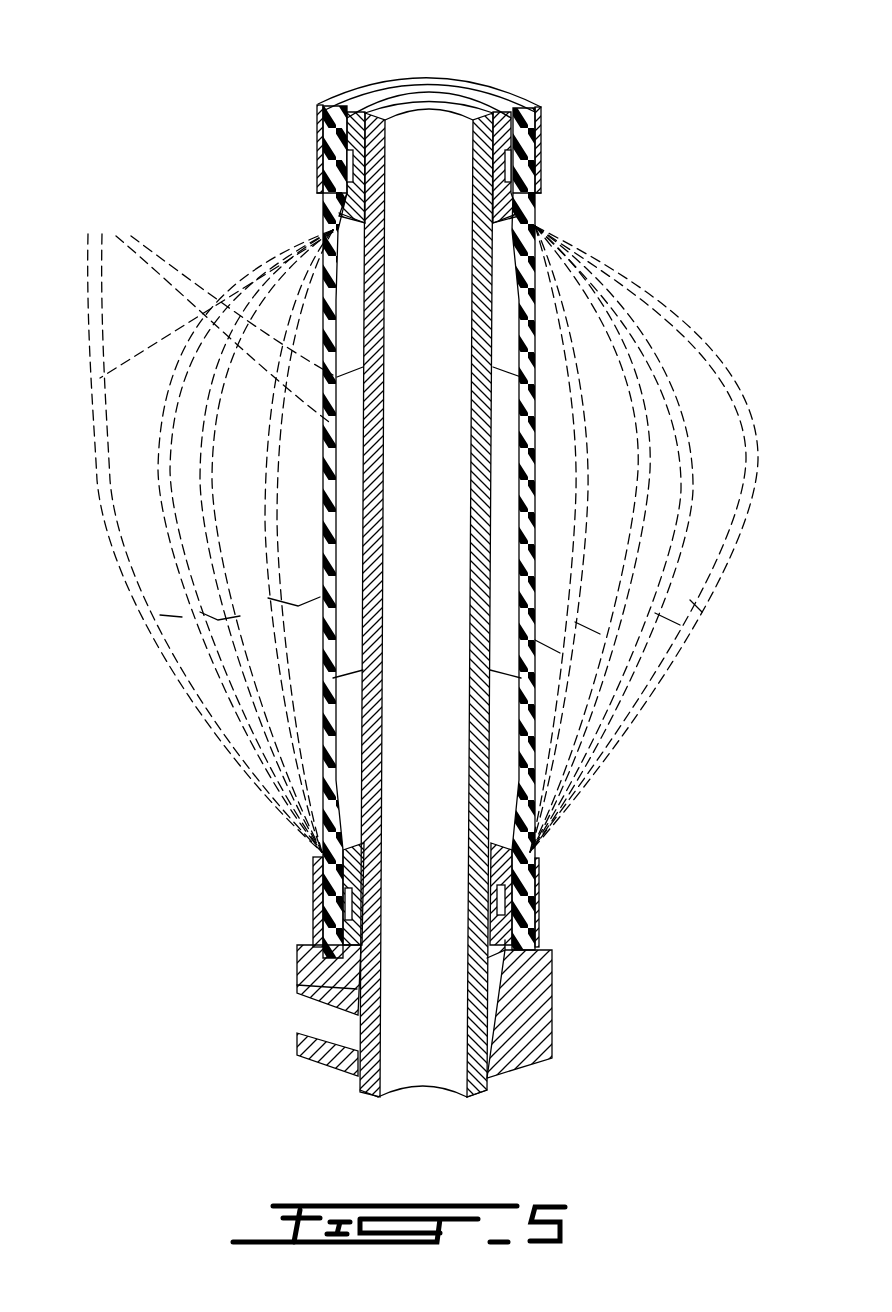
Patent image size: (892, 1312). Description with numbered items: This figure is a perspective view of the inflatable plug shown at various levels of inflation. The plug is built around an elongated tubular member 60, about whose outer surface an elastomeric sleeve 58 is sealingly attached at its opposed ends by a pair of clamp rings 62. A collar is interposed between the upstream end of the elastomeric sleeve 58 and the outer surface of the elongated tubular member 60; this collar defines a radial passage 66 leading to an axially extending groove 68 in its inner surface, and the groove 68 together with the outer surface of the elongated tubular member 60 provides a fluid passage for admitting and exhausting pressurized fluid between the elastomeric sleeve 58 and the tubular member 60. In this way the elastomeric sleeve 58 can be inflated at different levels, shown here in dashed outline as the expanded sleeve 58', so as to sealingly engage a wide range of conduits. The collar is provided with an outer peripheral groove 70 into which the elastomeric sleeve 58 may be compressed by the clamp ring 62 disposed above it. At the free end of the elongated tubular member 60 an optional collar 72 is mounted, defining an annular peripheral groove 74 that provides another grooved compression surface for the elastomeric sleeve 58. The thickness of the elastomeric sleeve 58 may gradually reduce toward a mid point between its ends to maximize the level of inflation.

The elastomeric sleeve 58 is at (323, 501).
The expanded elastomeric sleeve leaves 58' is at (423, 521).
The elongated tubular member 60 is at (537, 213).
The clamp rings 62 is at (318, 127).
The radial passage 66 is at (322, 1021).
The axially extending groove 68 is at (298, 967).
The outer peripheral groove 70 is at (501, 899).
The optional collar 72 is at (538, 127).
The annular peripheral groove 74 is at (538, 175).